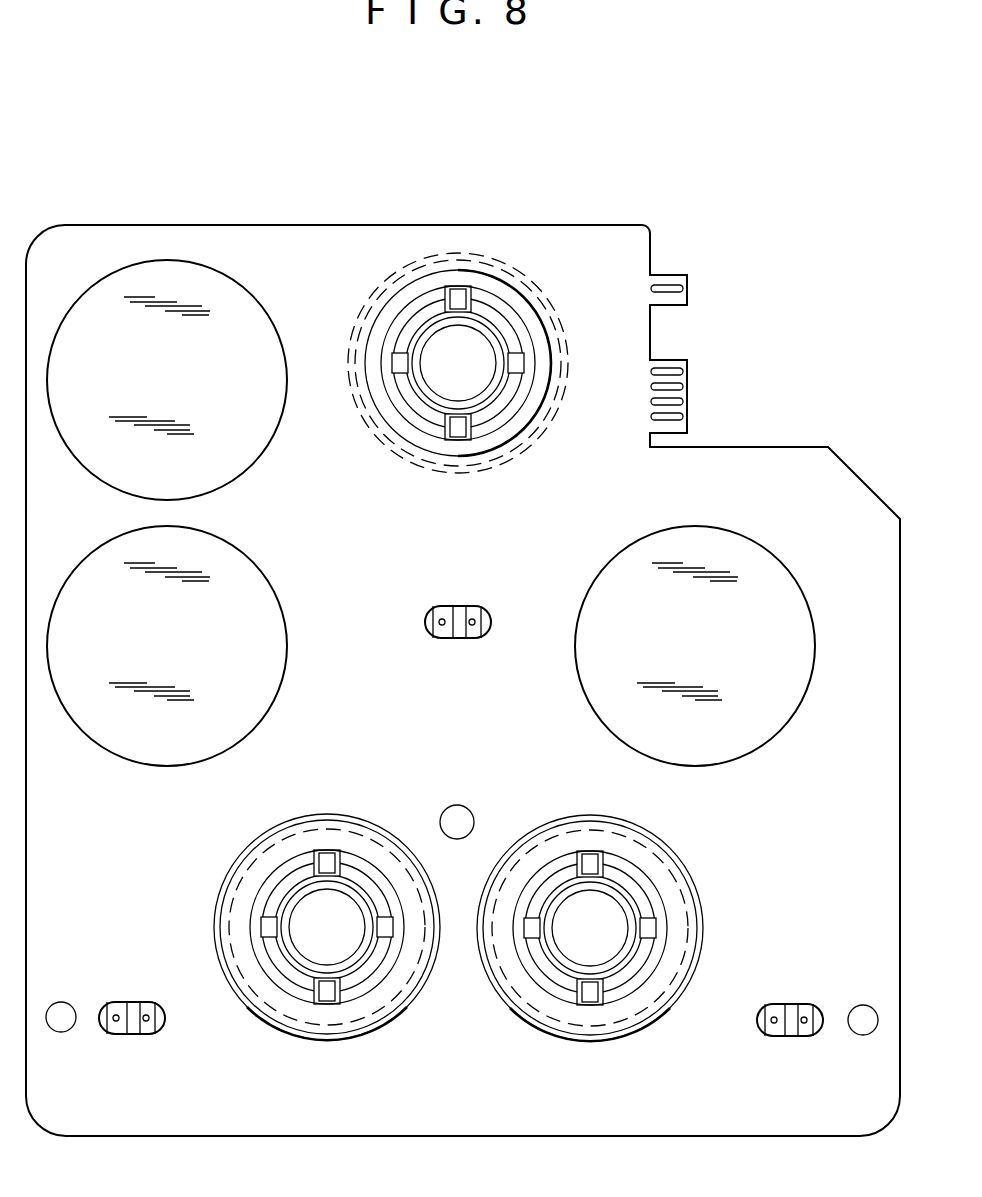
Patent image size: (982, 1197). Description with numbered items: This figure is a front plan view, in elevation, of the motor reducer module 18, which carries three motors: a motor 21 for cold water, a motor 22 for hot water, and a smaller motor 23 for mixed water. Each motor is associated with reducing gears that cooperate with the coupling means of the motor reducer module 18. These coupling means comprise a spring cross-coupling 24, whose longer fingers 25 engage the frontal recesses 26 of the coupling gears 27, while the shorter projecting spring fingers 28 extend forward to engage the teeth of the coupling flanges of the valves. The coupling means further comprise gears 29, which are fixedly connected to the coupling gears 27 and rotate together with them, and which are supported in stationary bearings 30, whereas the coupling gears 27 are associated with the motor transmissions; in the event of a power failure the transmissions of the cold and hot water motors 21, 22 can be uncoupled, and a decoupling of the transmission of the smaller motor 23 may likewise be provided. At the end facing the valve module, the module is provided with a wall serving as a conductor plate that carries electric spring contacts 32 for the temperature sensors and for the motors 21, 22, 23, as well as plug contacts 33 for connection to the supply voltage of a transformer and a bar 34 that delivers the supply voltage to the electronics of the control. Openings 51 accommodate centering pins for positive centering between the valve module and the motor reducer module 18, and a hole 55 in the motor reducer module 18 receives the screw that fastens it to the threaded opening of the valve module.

The motor reducer module 18 is at (42, 215).
The motor for cold water 21 is at (265, 620).
The motor for hot water 22 is at (742, 568).
The motor for mixed water 23 is at (172, 275).
The spring cross-coupling 24 is at (495, 325).
The longer fingers 25 is at (457, 285).
The frontal recesses 26 is at (458, 450).
The coupling gears 27 is at (540, 377).
The shorter projecting spring fingers 28 is at (395, 360).
The gears 29 is at (355, 418).
The stationary bearings 30 is at (430, 392).
The electric spring contacts 32 is at (458, 640).
The plug contacts 33 is at (672, 290).
The bar 34 is at (675, 405).
The openings 51 is at (61, 1020).
The hole 55 is at (458, 822).